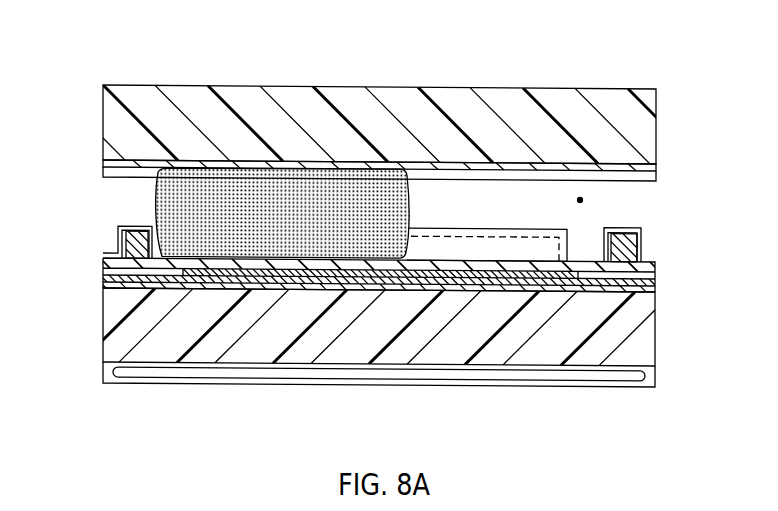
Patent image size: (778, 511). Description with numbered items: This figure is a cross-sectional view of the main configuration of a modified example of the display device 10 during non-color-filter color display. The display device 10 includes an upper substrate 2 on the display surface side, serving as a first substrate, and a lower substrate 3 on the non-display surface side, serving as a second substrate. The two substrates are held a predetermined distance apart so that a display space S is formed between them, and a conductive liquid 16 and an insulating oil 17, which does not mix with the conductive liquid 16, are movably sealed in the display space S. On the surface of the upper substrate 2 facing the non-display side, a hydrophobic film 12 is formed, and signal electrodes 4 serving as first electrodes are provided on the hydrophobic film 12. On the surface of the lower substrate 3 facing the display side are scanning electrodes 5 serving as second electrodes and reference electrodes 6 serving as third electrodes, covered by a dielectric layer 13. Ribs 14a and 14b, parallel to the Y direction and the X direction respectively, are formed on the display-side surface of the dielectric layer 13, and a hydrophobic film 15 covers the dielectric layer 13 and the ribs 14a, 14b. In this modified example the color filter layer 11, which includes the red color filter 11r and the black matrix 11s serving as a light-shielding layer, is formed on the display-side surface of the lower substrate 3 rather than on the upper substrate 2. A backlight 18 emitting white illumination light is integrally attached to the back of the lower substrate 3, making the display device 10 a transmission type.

The display device 10 is at (635, 78).
The upper substrate 2 is at (115, 118).
The lower substrate 3 is at (108, 320).
The signal electrodes 4 is at (656, 181).
The scanning electrodes 5 is at (290, 268).
The reference electrodes 6 is at (482, 262).
The color filter layer 11 is at (102, 281).
The black matrix 11s is at (155, 289).
The red color filter 11r is at (267, 290).
The hydrophobic film 12 is at (654, 166).
The dielectric layer 13 is at (650, 284).
The rib 14a is at (120, 243).
The rib 14b is at (457, 250).
The hydrophobic film 15 is at (133, 229).
The conductive liquid 16 is at (156, 200).
The insulating oil 17 is at (438, 208).
The backlight 18 is at (113, 372).
The display space S is at (580, 198).